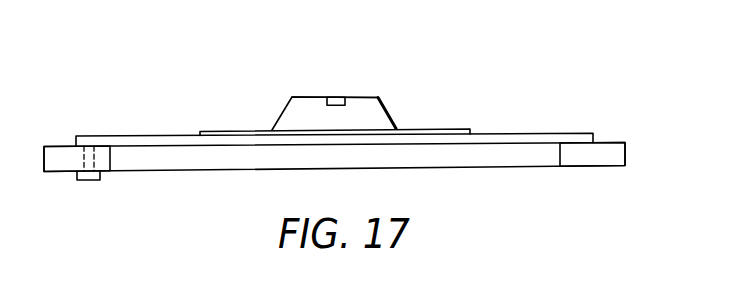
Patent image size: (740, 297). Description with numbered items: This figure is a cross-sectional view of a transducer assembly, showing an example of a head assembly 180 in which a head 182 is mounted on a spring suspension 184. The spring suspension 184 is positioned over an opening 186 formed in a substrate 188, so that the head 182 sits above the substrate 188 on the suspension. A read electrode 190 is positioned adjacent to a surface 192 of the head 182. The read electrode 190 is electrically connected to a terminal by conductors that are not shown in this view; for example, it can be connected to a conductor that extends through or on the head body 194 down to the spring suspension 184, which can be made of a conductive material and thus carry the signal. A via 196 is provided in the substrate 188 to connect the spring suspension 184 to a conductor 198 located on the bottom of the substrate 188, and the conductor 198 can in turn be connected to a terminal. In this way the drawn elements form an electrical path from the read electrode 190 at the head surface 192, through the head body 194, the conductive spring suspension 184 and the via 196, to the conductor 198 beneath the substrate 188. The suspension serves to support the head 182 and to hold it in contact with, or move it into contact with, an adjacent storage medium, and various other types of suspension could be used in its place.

The head assembly 180 is at (528, 68).
The head 182 is at (388, 112).
The spring suspension 184 is at (536, 139).
The opening 186 is at (473, 160).
The substrate 188 is at (590, 160).
The read electrode 190 is at (333, 96).
The surface 192 is at (362, 96).
The head body 194 is at (383, 122).
The via 196 is at (97, 160).
The conductor 198 is at (90, 180).